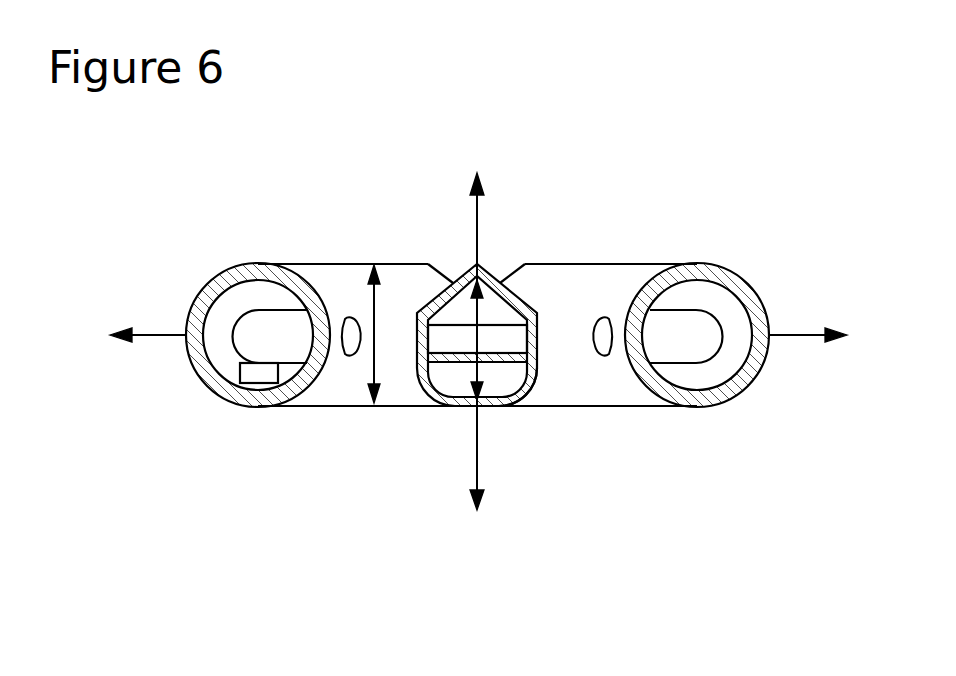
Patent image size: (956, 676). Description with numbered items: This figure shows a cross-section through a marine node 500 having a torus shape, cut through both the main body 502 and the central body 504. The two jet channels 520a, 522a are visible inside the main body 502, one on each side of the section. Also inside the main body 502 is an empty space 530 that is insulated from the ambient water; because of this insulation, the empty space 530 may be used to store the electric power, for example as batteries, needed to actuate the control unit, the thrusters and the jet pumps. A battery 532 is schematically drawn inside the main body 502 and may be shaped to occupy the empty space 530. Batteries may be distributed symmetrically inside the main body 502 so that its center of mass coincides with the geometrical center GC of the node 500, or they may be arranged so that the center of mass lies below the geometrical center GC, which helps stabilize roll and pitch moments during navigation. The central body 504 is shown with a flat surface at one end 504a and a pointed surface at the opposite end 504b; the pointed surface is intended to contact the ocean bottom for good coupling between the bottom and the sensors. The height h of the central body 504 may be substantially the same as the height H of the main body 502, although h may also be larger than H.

The node 500 is at (558, 107).
The main body 502 is at (595, 282).
The central body 504 is at (456, 282).
The flat surface end 504a is at (503, 403).
The pointed surface end 504b is at (502, 283).
The jet channel 520a is at (692, 330).
The jet channel 522a is at (258, 327).
The empty space 530 is at (690, 372).
The battery 532 is at (255, 373).
The geometrical center GC is at (470, 338).
The height of the central body h is at (475, 362).
The height of the main body H is at (383, 334).